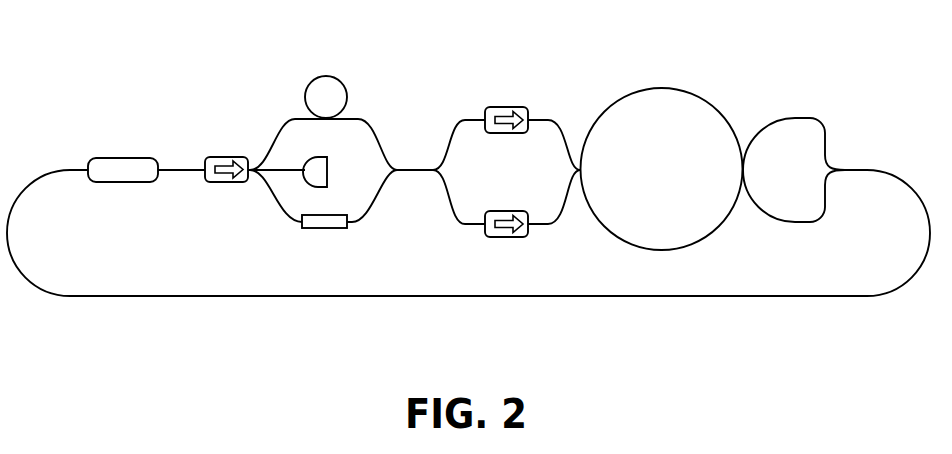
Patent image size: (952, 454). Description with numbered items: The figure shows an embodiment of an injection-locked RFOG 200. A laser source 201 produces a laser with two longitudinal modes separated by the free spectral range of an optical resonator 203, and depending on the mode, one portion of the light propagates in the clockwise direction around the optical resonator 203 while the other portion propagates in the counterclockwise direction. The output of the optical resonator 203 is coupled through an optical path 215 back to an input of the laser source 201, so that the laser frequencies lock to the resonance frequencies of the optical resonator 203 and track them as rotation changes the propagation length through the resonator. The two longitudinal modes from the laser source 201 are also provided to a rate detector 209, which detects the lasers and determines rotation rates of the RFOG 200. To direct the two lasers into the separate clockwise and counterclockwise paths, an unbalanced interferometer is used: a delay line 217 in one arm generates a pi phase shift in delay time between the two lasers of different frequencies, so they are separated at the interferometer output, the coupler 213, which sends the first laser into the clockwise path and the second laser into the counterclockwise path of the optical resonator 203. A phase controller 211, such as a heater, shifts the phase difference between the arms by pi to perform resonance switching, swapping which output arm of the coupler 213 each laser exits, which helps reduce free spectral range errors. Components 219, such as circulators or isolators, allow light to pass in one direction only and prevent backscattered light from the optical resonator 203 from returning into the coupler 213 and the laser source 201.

The injection-locked RFOG 200 is at (106, 66).
The laser source 201 is at (127, 158).
The optical resonator 203 is at (667, 87).
The rate detector 209 is at (311, 157).
The phase controller 211 is at (320, 229).
The coupler 213 is at (403, 173).
The optical path 215 is at (516, 297).
The delay line 217 is at (306, 100).
The components 219 is at (223, 157).